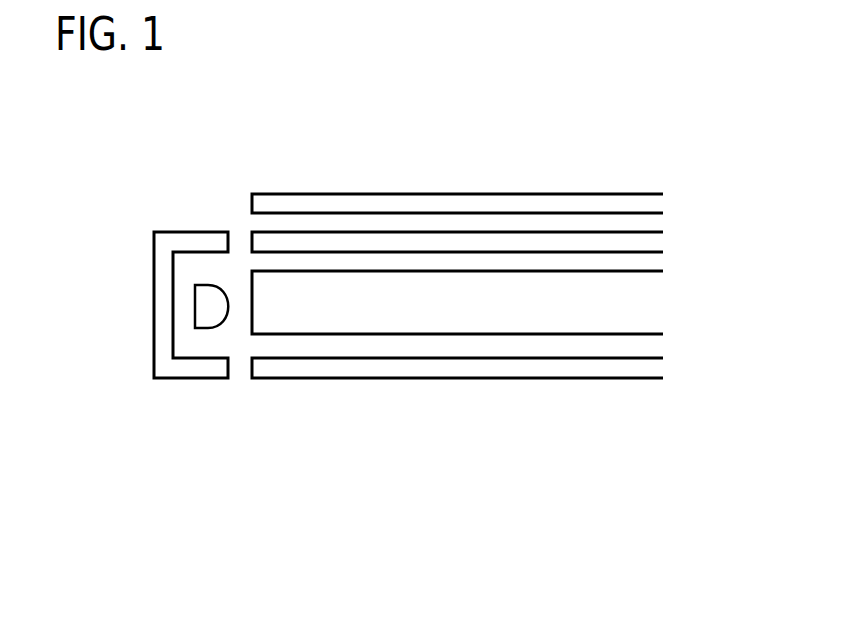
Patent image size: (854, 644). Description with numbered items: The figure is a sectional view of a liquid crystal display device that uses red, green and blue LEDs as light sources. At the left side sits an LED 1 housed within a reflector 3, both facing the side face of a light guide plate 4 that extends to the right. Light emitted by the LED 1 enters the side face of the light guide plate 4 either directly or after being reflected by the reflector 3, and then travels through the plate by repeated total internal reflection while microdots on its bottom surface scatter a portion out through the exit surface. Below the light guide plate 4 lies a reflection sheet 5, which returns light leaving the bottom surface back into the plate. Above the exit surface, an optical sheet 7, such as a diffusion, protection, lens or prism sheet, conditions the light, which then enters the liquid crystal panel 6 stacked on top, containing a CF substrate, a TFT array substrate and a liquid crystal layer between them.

The LED 1 is at (212, 320).
The reflector 3 is at (178, 237).
The light guide plate 4 is at (655, 313).
The reflection sheet 5 is at (655, 374).
The liquid crystal panel 6 is at (655, 208).
The optical sheet 7 is at (655, 246).